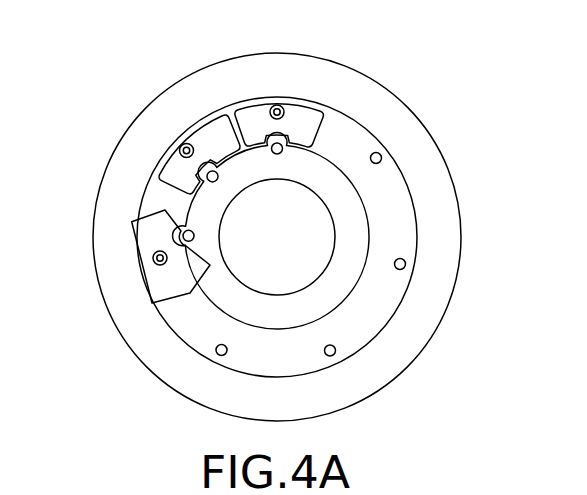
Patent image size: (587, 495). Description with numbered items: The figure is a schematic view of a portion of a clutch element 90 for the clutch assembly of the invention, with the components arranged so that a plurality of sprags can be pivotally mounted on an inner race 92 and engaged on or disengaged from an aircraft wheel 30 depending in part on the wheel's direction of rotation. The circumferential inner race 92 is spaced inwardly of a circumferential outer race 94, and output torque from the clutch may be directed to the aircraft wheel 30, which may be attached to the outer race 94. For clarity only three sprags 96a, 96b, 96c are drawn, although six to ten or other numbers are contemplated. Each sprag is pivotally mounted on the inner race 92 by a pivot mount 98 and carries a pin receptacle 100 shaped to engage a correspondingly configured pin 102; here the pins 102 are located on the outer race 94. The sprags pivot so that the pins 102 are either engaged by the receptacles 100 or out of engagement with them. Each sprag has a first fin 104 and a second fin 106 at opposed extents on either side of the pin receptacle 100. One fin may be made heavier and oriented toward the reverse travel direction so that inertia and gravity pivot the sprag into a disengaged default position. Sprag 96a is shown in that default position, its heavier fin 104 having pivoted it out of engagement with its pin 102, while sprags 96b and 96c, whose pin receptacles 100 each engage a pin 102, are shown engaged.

The aircraft wheel 30 is at (403, 125).
The clutch element 90 is at (418, 398).
The inner race 92 is at (358, 230).
The outer race 94 is at (253, 353).
The sprag 96a is at (177, 287).
The sprag 96b is at (247, 115).
The sprag 96c is at (173, 170).
The pivot mount 98 is at (194, 236).
The pin receptacle 100 is at (193, 118).
The pin 102 is at (277, 105).
The first fin 104 is at (147, 215).
The second fin 106 is at (188, 275).